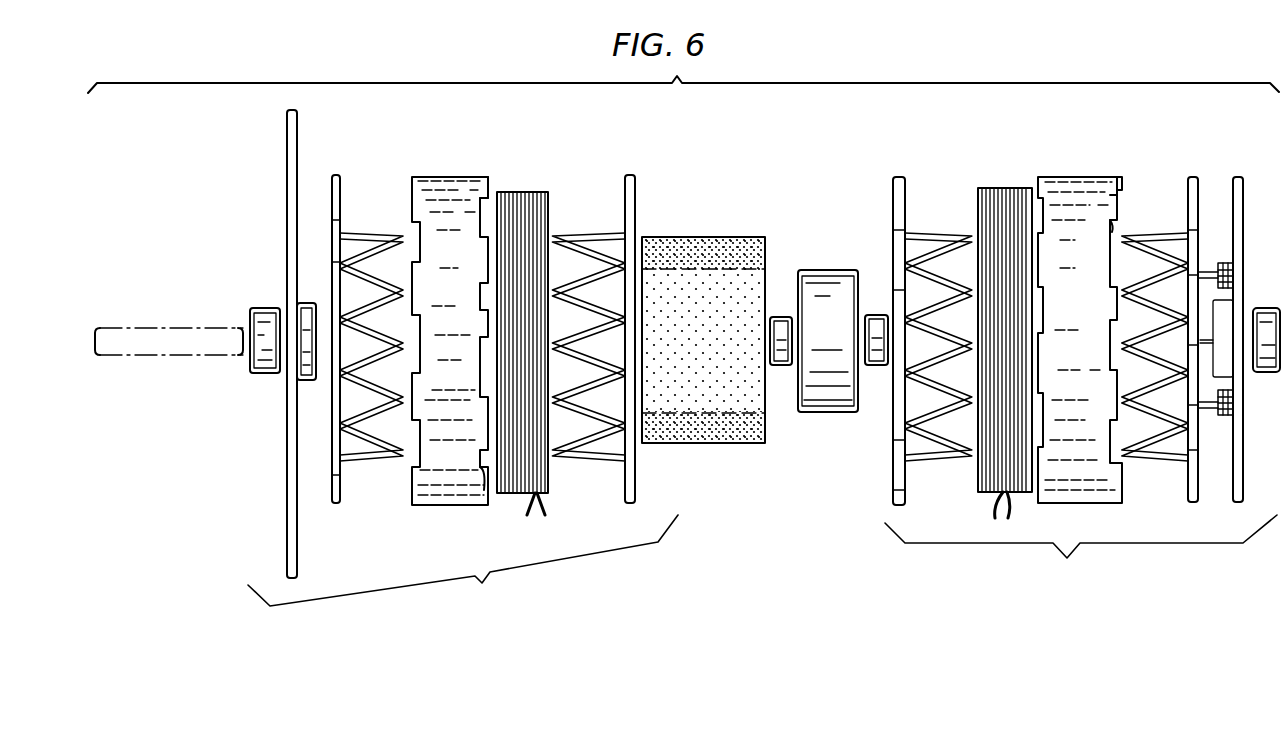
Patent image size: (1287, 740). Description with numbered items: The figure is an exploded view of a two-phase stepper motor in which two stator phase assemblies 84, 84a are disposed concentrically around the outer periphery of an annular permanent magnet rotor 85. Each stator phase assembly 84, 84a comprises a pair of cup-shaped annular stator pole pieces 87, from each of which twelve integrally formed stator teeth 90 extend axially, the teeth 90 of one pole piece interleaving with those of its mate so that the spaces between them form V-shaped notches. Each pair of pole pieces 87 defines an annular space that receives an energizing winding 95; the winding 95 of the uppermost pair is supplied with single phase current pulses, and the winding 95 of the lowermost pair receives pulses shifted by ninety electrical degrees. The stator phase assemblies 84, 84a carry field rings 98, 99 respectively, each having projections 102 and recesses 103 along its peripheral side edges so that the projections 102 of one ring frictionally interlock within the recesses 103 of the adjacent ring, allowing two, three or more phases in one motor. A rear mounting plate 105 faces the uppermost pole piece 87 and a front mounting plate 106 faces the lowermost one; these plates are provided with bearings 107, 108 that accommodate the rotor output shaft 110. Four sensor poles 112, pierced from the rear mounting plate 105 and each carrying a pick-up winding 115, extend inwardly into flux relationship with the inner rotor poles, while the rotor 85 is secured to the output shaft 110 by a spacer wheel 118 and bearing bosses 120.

The stator phase assembly 84 is at (1081, 559).
The stator phase assembly 84a is at (463, 567).
The annular permanent magnet rotor 85 is at (712, 443).
The stator pole piece 87 is at (630, 176).
The stator teeth 90 is at (377, 434).
The energizing winding 95 is at (531, 188).
The field ring 98 is at (1090, 177).
The field ring 99 is at (440, 177).
The projections 102 is at (488, 180).
The recesses 103 is at (490, 485).
The rear mounting plate 105 is at (1243, 440).
The front mounting plate 106 is at (288, 507).
The bearing 107 is at (1268, 308).
The bearing 108 is at (254, 305).
The rotor output shaft 110 is at (104, 331).
The sensor poles 112 is at (1205, 272).
The pick-up winding 115 is at (1233, 270).
The spacer wheel 118 is at (827, 412).
The bearing bosses 120 is at (786, 365).